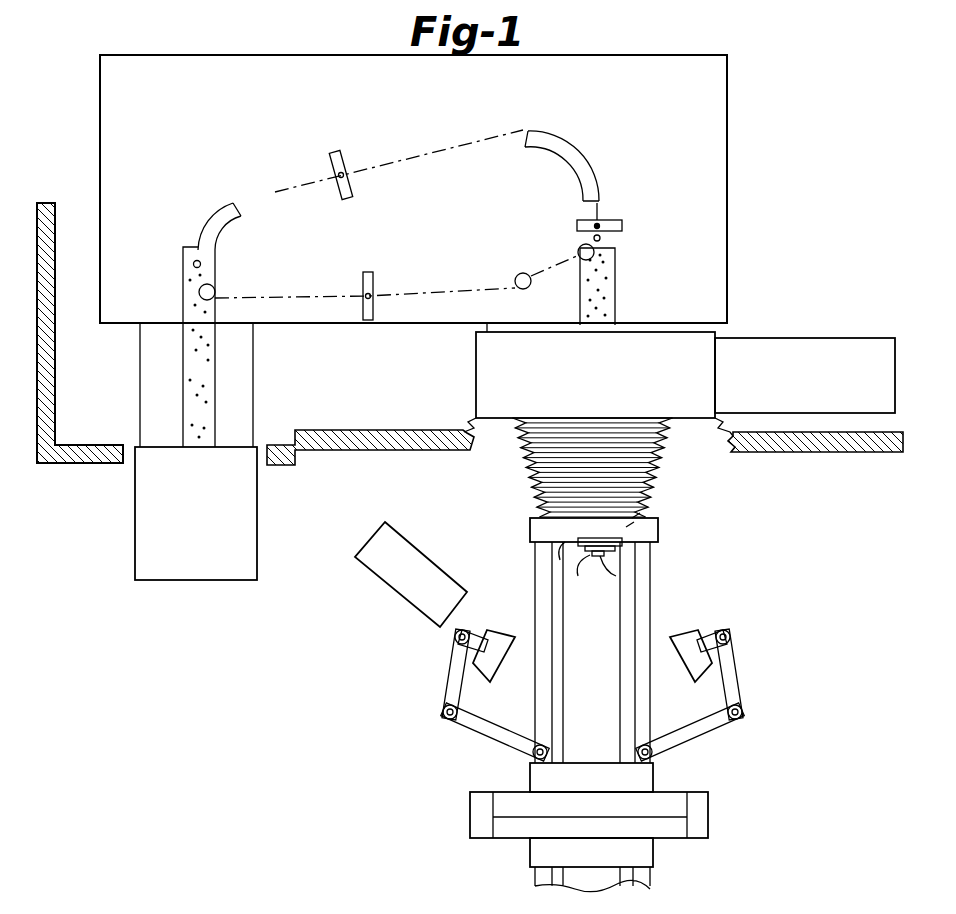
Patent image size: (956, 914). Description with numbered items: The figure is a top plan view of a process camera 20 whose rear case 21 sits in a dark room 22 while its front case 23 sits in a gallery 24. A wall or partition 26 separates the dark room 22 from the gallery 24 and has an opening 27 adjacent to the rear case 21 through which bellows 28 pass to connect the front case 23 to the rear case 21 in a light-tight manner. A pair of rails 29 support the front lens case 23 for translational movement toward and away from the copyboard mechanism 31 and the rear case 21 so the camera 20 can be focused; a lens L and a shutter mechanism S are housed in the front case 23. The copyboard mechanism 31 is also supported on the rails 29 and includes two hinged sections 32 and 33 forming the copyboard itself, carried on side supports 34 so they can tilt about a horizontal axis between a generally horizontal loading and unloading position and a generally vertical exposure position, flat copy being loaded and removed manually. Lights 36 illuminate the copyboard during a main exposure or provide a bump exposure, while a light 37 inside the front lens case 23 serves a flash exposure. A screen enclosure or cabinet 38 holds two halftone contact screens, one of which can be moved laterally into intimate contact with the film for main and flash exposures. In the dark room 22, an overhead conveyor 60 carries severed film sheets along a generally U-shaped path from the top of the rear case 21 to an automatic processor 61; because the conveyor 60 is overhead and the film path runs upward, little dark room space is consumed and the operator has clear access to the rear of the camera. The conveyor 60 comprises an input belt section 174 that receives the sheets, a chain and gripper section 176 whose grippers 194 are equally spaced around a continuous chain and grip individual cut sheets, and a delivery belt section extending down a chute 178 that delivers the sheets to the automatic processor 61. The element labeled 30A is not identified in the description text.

The process camera 20 is at (757, 309).
The rear case 21 is at (690, 405).
The dark room 22 is at (806, 188).
The front case 23 is at (659, 529).
The gallery 24 is at (817, 563).
The partition 26 is at (350, 453).
The opening 27 is at (480, 442).
The bellows 28 is at (656, 465).
The rails 29 is at (552, 578).
The detector 30A is at (425, 624).
The copyboard mechanism 31 is at (727, 820).
The hinged section 32 is at (510, 792).
The hinged section 33 is at (520, 828).
The side supports 34 is at (475, 812).
The lights 36 is at (501, 636).
The light 37 is at (575, 558).
The screen enclosure 38 is at (818, 356).
The overhead conveyor 60 is at (575, 148).
The automatic processor 61 is at (134, 563).
The conveyor input belt section 174 is at (616, 304).
The chain and gripper section 176 is at (195, 266).
The chute 178 is at (249, 388).
The grippers 194 is at (351, 158).
The shutter mechanism S is at (644, 517).
The lens L is at (616, 576).